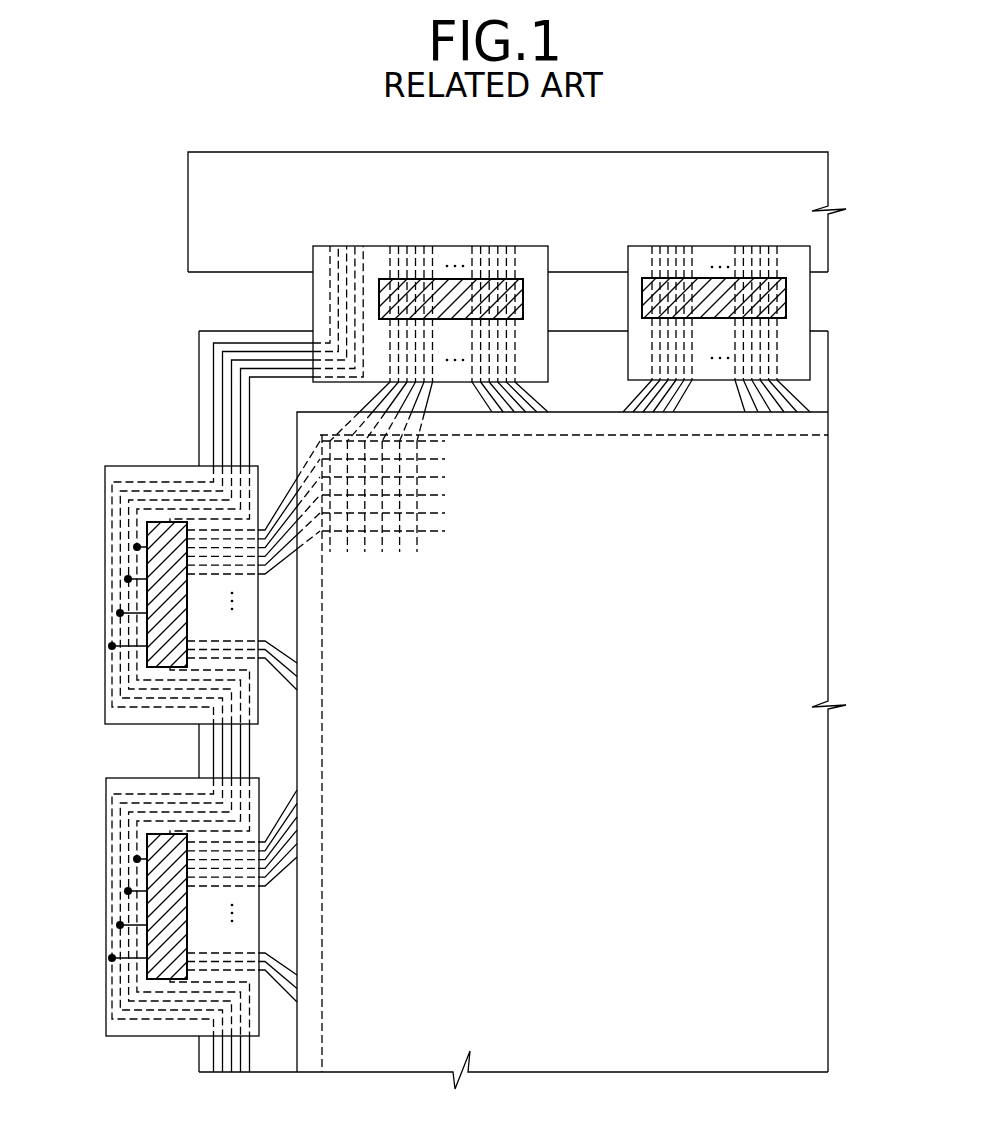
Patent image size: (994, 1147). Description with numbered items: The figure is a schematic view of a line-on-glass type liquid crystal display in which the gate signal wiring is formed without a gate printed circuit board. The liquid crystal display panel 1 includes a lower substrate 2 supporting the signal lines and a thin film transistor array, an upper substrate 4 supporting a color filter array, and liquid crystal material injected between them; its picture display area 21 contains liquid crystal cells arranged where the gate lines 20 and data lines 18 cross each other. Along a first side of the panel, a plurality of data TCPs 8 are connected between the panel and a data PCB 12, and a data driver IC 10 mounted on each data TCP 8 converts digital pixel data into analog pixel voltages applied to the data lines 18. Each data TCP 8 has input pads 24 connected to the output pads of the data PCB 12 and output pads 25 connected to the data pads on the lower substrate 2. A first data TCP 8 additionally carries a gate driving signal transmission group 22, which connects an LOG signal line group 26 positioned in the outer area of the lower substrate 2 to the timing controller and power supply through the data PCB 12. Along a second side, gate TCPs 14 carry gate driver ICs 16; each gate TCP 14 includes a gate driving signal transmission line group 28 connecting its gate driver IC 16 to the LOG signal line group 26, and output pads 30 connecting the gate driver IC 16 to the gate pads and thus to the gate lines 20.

The liquid crystal display panel 1 is at (858, 593).
The lower substrate 2 is at (828, 368).
The upper substrate 4 is at (820, 428).
The data TCP 8 is at (808, 323).
The data driver IC 10 is at (788, 290).
The data PCB 12 is at (823, 190).
The gate TCP 14 is at (105, 597).
The gate driver IC 16 is at (124, 578).
The data lines 18 is at (382, 546).
The gate lines 20 is at (448, 494).
The picture display area 21 is at (616, 743).
The gate driving signal transmission group 22 is at (327, 290).
The input pads 24 is at (490, 275).
The output pads 25 is at (517, 363).
The LOG signal line group 26 is at (212, 367).
The gate driving signal transmission line group 28 is at (106, 536).
The output pads 30 is at (252, 536).